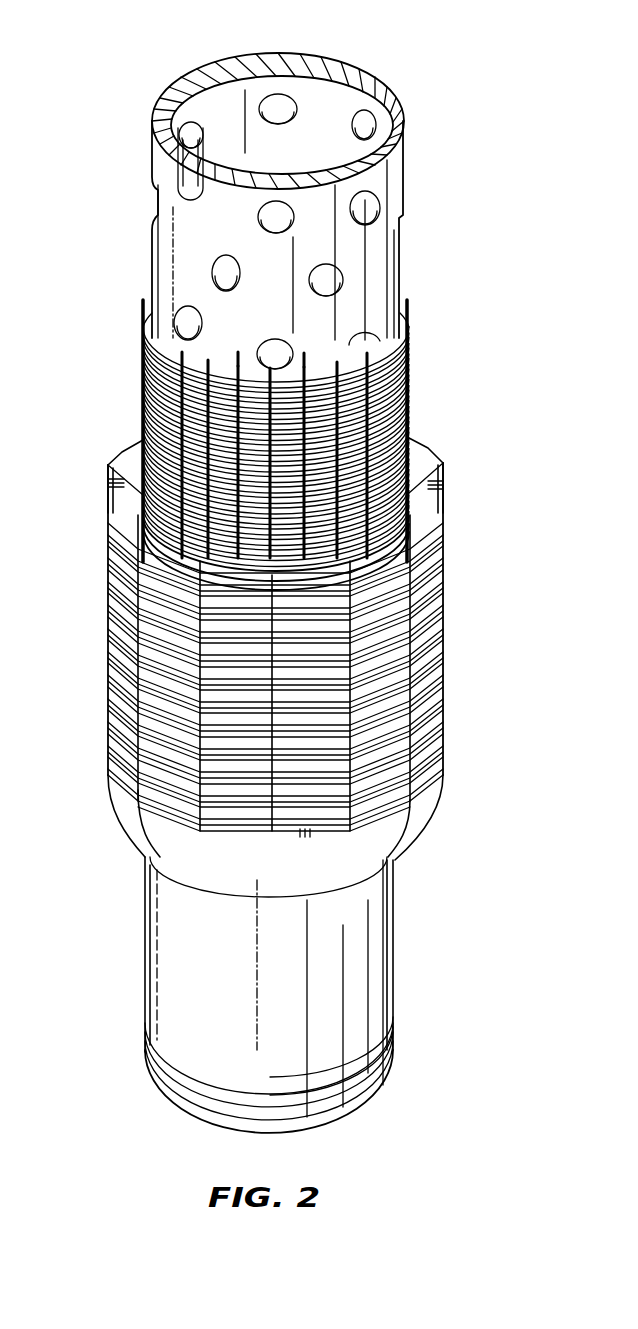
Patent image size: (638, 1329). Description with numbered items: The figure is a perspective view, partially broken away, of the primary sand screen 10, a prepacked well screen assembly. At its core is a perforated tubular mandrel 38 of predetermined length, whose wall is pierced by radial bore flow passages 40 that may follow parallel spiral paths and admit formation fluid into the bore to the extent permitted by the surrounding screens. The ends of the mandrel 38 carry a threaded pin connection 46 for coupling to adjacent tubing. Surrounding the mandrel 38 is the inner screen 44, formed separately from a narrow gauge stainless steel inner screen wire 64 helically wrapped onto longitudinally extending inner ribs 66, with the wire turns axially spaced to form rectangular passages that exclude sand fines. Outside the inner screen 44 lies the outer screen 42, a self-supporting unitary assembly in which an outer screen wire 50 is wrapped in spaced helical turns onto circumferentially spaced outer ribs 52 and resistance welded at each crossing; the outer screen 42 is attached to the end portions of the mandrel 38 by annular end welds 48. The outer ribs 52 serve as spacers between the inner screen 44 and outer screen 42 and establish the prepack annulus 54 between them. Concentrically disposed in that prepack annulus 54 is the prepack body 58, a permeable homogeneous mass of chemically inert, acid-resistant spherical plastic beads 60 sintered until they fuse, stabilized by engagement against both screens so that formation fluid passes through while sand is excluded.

The primary sand screen 10 is at (138, 74).
The perforated tubular mandrel 38 is at (168, 247).
The radial bore flow passages 40 is at (284, 123).
The outer screen 42 is at (278, 648).
The inner screen 44 is at (420, 370).
The threaded pin connection 46 is at (398, 1040).
The annular end welds 48 is at (163, 830).
The outer screen wire 50 is at (110, 503).
The outer ribs 52 is at (110, 463).
The prepack annulus 54 is at (128, 447).
The prepack body 58 is at (110, 550).
The spherical plastic beads 60 is at (428, 530).
The inner screen wire 64 is at (297, 368).
The inner ribs 66 is at (242, 362).